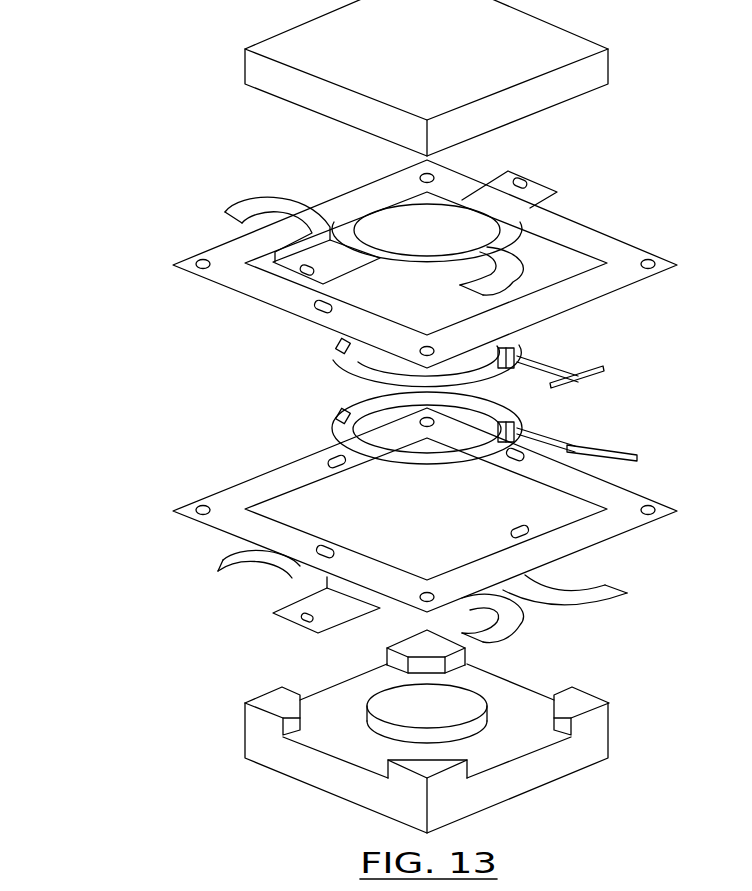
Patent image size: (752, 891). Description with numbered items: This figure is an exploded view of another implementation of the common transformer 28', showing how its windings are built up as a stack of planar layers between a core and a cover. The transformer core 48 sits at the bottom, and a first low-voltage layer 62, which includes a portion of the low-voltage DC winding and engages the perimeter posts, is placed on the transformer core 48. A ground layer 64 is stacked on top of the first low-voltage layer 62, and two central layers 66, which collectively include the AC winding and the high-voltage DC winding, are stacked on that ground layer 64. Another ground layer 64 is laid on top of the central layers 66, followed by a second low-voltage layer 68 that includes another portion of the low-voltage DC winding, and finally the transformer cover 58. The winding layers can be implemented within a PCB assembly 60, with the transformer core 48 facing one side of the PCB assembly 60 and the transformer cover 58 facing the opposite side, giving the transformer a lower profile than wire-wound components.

The common transformer 28' is at (366, 416).
The transformer cover 58 is at (610, 84).
The PCB assembly 60 is at (175, 157).
The second low-voltage layer 68 is at (548, 194).
The ground layer 64 is at (617, 291).
The central layers 66 is at (575, 447).
The first low-voltage layer 62 is at (627, 593).
The transformer core 48 is at (610, 758).